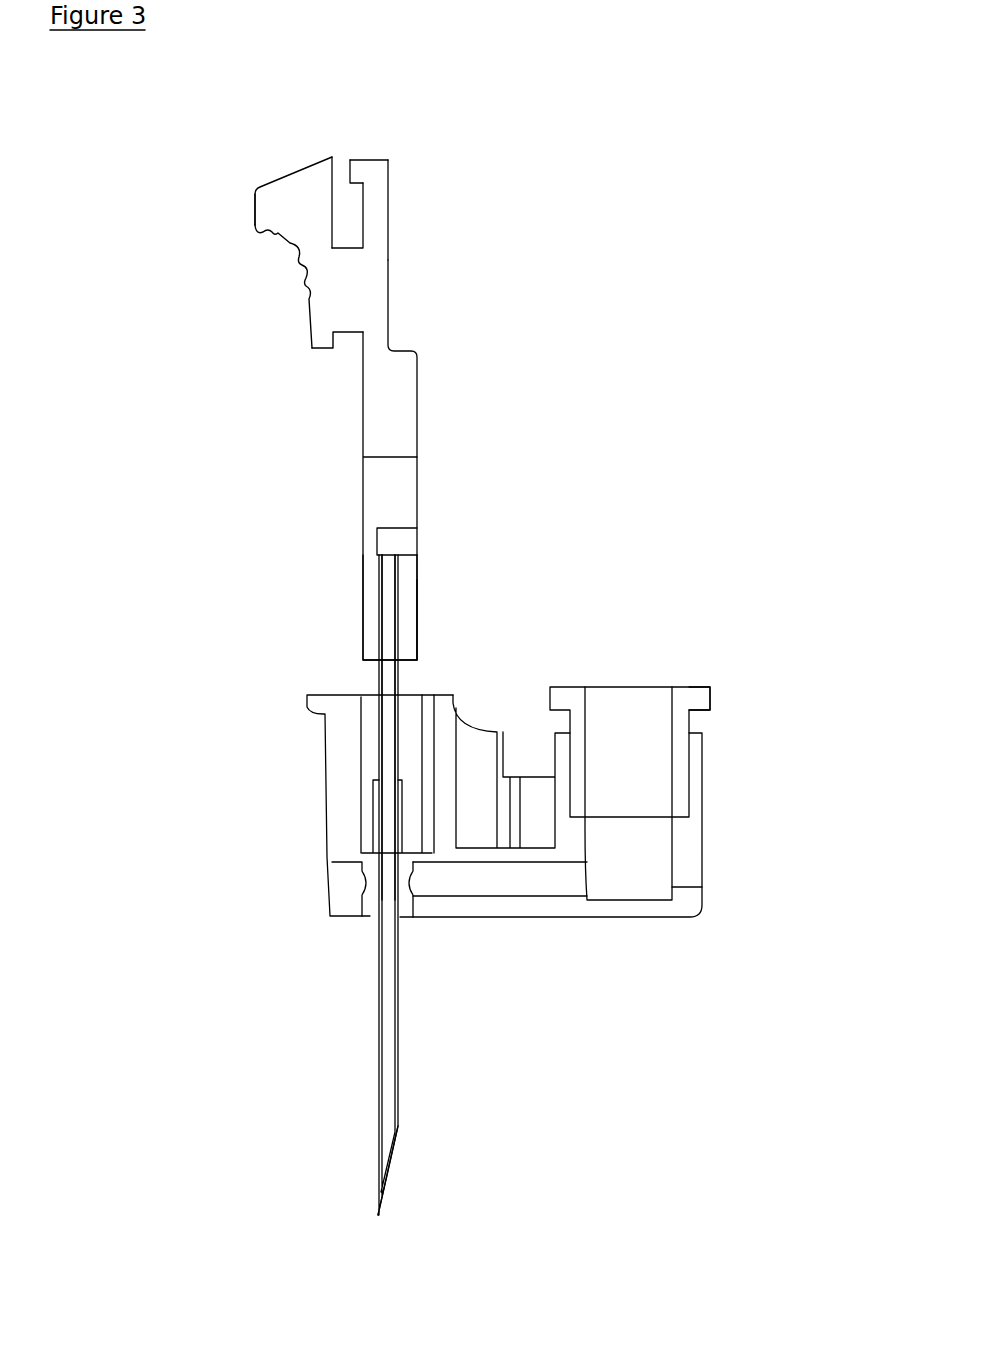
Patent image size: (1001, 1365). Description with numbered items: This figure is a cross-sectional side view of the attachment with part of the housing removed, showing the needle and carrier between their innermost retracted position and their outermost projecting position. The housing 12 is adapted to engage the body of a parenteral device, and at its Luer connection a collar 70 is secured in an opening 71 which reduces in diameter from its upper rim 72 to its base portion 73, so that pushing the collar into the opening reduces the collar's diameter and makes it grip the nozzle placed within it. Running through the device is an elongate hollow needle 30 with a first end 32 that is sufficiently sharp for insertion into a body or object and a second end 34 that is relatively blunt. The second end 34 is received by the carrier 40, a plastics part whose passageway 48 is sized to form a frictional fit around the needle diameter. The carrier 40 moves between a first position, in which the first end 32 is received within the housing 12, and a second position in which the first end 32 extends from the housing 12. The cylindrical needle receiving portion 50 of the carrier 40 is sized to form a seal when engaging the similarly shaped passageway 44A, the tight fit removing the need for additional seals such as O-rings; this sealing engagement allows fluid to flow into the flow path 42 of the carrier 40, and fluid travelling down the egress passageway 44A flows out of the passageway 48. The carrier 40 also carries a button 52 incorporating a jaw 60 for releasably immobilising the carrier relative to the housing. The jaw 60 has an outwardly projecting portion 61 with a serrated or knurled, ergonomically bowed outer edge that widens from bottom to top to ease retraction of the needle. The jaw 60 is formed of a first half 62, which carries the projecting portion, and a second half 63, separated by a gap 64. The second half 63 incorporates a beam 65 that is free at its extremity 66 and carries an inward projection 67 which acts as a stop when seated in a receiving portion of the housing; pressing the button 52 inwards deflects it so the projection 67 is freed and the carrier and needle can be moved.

The housing 12 is at (702, 873).
The elongate hollow needle 30 is at (378, 1002).
The first end 32 is at (393, 1165).
The second end 34 is at (380, 560).
The carrier 40 is at (377, 412).
The flow path 42 is at (413, 538).
The passageway 44A is at (367, 906).
The passageway 48 is at (380, 607).
The needle receiving portion 50 is at (415, 645).
The button 52 is at (268, 203).
The jaw 60 is at (341, 147).
The outwardly projecting portion 61 is at (260, 220).
The first half 62 is at (312, 212).
The second half 63 is at (380, 230).
The gap 64 is at (338, 213).
The beam 65 is at (380, 208).
The extremity 66 is at (362, 166).
The inward projection 67 is at (357, 160).
The collar 70 is at (648, 698).
The opening 71 is at (634, 892).
The upper rim 72 is at (677, 722).
The base portion 73 is at (700, 895).